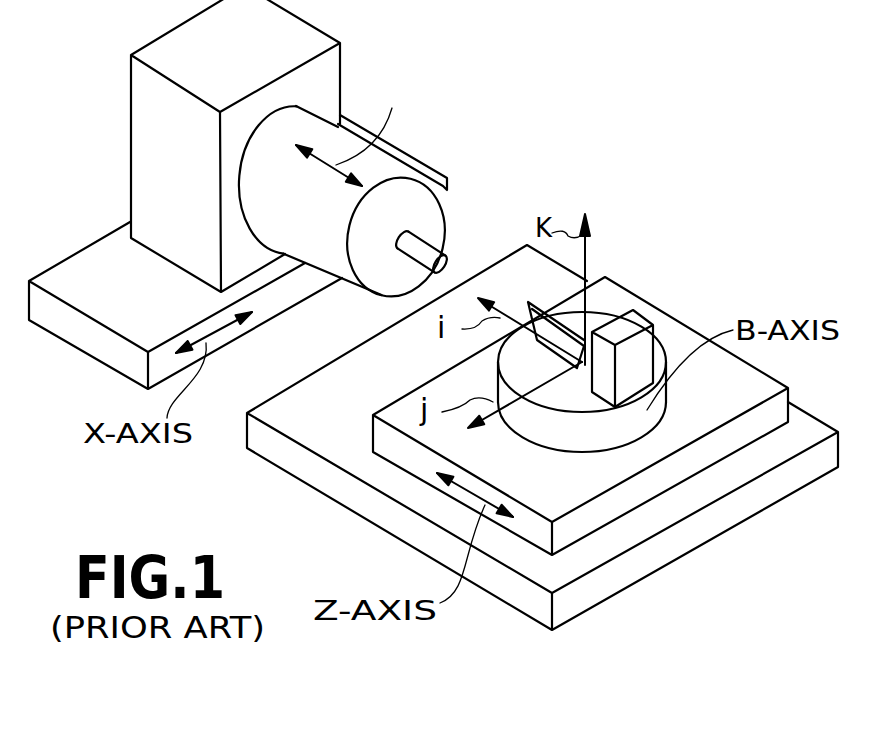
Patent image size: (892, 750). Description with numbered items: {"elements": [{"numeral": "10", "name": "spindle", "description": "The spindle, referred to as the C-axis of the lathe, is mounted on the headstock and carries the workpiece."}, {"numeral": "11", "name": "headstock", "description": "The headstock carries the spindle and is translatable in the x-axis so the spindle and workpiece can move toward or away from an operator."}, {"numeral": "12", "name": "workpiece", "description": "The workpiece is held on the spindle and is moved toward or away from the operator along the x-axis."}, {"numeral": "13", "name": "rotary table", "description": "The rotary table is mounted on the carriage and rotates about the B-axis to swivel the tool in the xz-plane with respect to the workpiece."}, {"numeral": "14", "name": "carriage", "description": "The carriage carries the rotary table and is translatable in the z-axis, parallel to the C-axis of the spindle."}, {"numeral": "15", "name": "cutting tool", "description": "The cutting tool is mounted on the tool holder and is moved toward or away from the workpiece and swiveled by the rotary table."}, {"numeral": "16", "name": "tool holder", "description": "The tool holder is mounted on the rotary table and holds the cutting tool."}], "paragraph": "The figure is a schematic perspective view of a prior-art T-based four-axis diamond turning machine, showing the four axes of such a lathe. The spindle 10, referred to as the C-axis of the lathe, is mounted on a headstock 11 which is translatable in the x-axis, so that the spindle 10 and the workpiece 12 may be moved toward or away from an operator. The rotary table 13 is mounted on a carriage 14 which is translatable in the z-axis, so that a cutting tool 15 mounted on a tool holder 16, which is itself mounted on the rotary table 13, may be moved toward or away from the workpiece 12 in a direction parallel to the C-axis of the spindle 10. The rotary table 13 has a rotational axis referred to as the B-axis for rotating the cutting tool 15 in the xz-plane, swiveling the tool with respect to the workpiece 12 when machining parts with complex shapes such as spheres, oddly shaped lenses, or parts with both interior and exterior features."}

The C-axis spindle / tool head 10 is at (387, 176).
The column housing 11 is at (255, 56).
The spindle shaft 12 is at (446, 248).
The rotary table (B-axis) 13 is at (578, 433).
The Z-axis slide platform 14 is at (729, 409).
The workpiece plate 15 is at (543, 308).
The workpiece block 16 is at (633, 323).